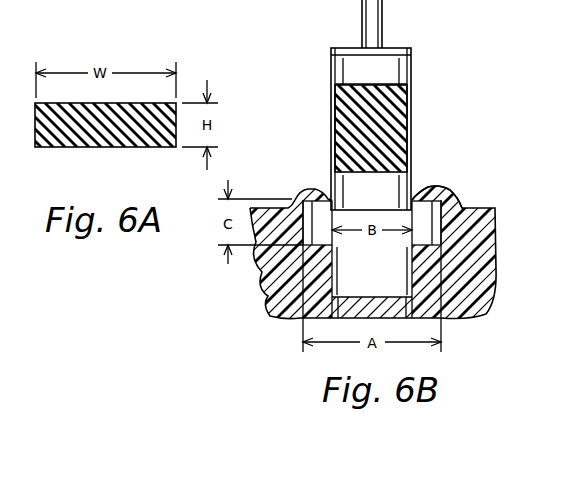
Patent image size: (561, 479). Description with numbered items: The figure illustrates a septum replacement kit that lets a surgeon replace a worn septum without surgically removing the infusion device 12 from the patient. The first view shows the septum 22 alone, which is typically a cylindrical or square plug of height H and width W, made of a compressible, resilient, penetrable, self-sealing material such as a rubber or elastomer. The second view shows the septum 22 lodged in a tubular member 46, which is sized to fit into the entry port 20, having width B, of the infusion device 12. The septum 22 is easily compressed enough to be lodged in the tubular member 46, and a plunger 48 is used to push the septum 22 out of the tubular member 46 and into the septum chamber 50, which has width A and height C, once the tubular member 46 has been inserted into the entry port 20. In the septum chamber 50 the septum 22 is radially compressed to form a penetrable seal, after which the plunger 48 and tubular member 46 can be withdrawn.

In FIG. 6B, the infusion device 12 is at (470, 308).
In FIG. 6B, the entry port 20 is at (419, 190).
In FIG. 6A, the septum 22 is at (105, 147).
In FIG. 6B, the septum 22 is at (348, 117).
In FIG. 6B, the tubular member 46 is at (412, 50).
In FIG. 6B, the plunger 48 is at (383, 26).
In FIG. 6B, the septum chamber 50 is at (428, 227).